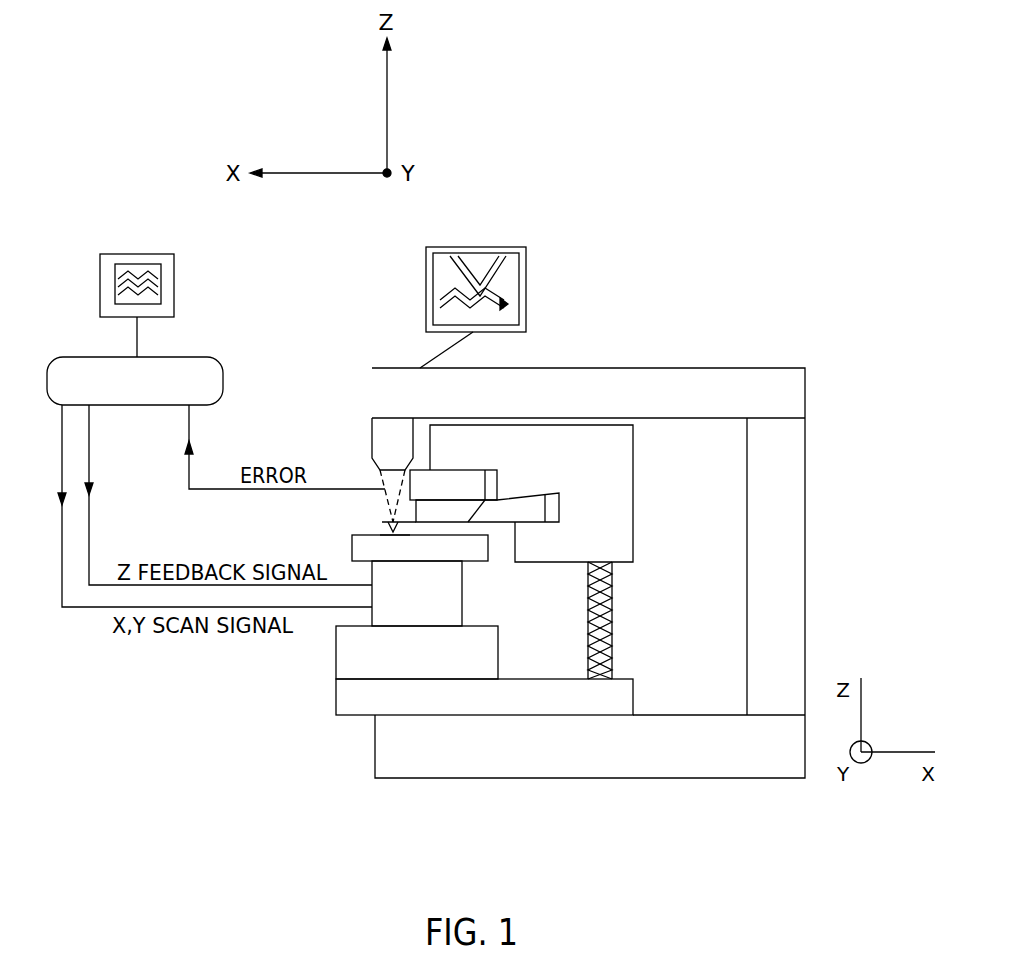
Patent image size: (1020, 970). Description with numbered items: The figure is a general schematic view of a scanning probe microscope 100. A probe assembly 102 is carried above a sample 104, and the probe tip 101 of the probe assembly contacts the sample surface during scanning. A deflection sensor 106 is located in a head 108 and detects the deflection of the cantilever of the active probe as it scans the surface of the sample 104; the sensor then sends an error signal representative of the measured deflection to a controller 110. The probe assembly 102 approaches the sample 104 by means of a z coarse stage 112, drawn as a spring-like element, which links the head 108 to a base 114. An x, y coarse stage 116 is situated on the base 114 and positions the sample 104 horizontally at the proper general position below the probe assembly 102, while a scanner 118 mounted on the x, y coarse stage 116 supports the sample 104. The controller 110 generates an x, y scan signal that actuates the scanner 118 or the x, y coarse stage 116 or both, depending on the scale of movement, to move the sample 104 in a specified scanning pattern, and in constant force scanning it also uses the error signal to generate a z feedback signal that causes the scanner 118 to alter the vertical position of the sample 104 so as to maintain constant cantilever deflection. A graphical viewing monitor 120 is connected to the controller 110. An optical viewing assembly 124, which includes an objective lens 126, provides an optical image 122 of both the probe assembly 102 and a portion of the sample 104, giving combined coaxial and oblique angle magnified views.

The microscope 100 is at (780, 348).
The probe tip 101 is at (382, 522).
The probe assembly 102 is at (410, 522).
The sample 104 is at (352, 548).
The deflection sensor 106 is at (497, 480).
The head 108 is at (627, 480).
The controller 110 is at (191, 357).
The z coarse stage 112 is at (612, 620).
The base 114 is at (336, 704).
The x, y coarse stage 116 is at (336, 658).
The scanner 118 is at (462, 608).
The graphical viewing monitor 120 is at (147, 254).
The optical image 122 is at (527, 283).
The optical viewing assembly 124 is at (348, 393).
The objective lens 126 is at (372, 443).